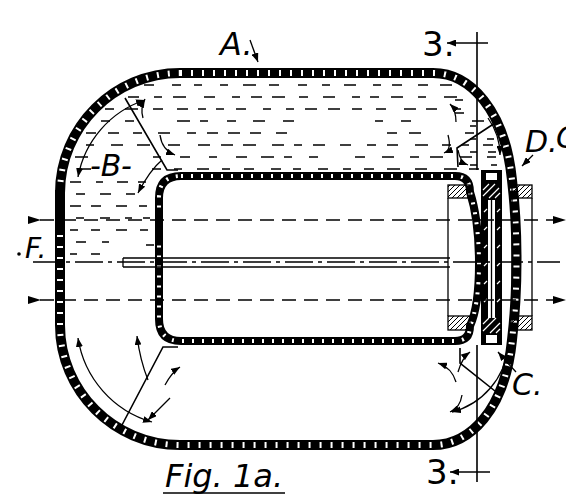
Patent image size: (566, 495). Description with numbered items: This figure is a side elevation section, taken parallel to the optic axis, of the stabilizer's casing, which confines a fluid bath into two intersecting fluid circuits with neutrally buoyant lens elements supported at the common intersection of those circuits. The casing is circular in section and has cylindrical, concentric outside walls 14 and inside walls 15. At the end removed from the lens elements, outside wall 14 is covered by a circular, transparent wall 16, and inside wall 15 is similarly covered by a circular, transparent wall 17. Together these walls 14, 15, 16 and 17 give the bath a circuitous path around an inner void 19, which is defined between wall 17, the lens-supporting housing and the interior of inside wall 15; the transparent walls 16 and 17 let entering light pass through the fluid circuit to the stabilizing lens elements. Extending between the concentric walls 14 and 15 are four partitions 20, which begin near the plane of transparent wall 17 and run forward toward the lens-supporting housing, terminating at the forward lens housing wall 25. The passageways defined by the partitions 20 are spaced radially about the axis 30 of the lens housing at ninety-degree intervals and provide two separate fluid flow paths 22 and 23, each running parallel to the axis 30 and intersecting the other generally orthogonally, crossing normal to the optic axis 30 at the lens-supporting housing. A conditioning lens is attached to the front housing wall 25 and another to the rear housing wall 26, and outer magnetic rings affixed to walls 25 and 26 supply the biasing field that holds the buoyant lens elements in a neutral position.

The outside wall 14 is at (317, 69).
The inside wall 15 is at (316, 172).
The transparent wall 16 is at (56, 212).
The transparent wall 17 is at (177, 230).
The inner void 19 is at (315, 197).
The partitions 20 is at (141, 250).
The fluid flow path 22 is at (293, 380).
The fluid flow path 23 is at (289, 145).
The forward lens housing wall 25 is at (468, 333).
The rear housing wall 26 is at (510, 338).
The axis 30 is at (533, 258).